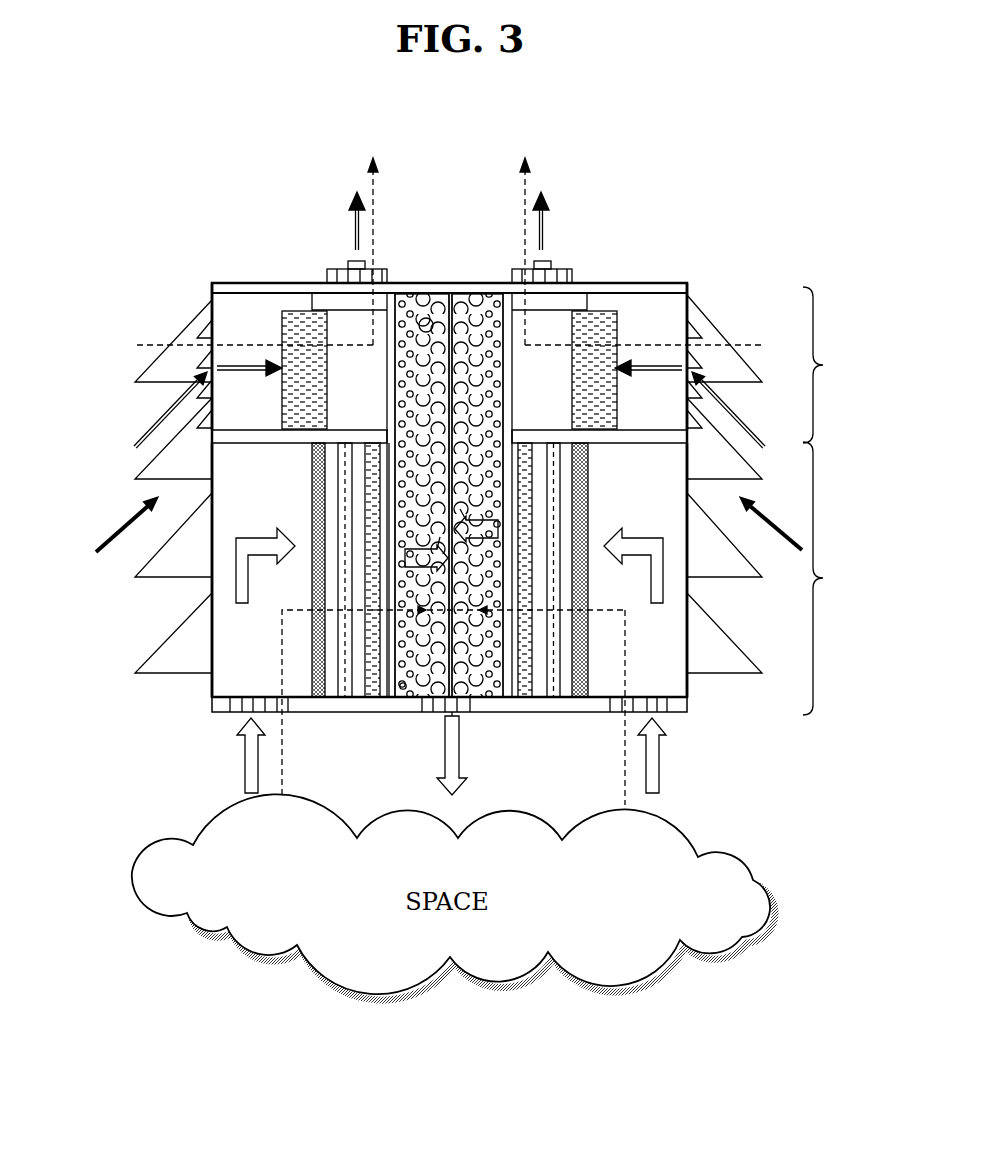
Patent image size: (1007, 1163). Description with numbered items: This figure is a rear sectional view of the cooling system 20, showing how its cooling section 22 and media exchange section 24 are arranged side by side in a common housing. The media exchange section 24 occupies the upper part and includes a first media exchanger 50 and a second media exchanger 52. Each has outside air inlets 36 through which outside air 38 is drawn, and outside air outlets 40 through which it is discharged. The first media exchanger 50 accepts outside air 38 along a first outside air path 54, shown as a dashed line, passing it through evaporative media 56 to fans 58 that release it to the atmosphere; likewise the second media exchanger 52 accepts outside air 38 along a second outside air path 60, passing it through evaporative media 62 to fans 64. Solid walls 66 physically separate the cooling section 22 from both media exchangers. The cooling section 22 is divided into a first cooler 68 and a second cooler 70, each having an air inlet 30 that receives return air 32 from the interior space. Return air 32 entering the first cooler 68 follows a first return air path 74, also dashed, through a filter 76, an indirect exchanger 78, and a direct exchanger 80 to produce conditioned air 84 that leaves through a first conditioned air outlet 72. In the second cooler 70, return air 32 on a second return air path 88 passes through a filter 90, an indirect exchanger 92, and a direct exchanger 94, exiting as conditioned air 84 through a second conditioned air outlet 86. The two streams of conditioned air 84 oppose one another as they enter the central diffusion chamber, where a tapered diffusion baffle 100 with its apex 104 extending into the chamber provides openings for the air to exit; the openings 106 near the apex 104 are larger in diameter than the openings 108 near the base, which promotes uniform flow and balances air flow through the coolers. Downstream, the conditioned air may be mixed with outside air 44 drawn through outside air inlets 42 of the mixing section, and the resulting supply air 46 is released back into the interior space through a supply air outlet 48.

The cooling system 20 is at (698, 119).
The cooling section 22 is at (823, 578).
The media exchange section 24 is at (823, 365).
The air inlet 30 is at (230, 704).
The return air 32 is at (236, 601).
The outside air inlets 36 is at (203, 330).
The outside air 38 is at (352, 238).
The outside air outlets 40 is at (327, 277).
The outside air inlets 42 is at (155, 655).
The outside air 44 is at (128, 516).
The supply air 46 is at (443, 772).
The supply air outlet 48 is at (470, 708).
The first media exchanger 50 is at (222, 301).
The second media exchanger 52 is at (676, 300).
The first outside air path 54 is at (375, 205).
The evaporative media 56 is at (322, 383).
The fans 58 is at (334, 262).
The second outside air path 60 is at (522, 205).
The evaporative media 62 is at (577, 383).
The fans 64 is at (561, 262).
The solid walls 66 is at (393, 312).
The first cooler 68 is at (222, 676).
The second cooler 70 is at (676, 674).
The first conditioned air outlet 72 is at (390, 698).
The first return air path 74 is at (278, 790).
The filter 76 is at (318, 698).
The indirect exchanger 78 is at (342, 698).
The direct exchanger 80 is at (372, 698).
The conditioned air 84 is at (451, 540).
The second conditioned air outlet 86 is at (461, 779).
The second return air path 88 is at (627, 797).
The filter 90 is at (587, 698).
The indirect exchanger 92 is at (555, 698).
The direct exchanger 94 is at (525, 698).
The diffusion baffle 100 is at (484, 298).
The apex 104 is at (455, 297).
The openings 106 is at (426, 319).
The openings 108 is at (406, 690).